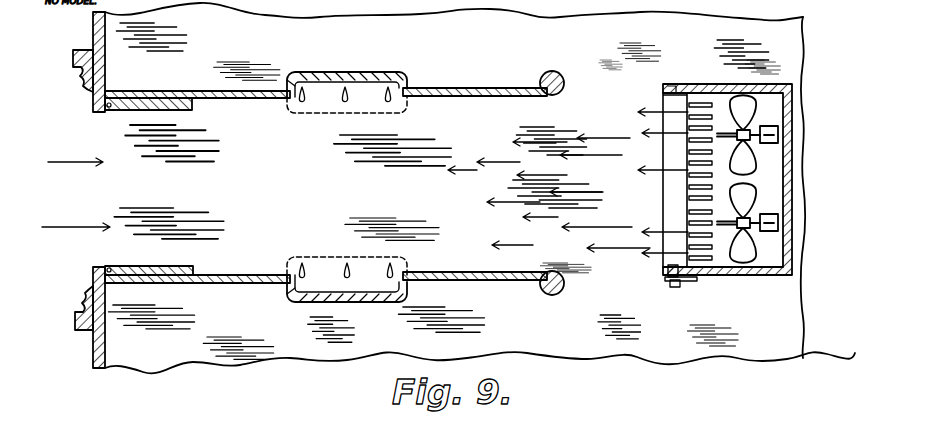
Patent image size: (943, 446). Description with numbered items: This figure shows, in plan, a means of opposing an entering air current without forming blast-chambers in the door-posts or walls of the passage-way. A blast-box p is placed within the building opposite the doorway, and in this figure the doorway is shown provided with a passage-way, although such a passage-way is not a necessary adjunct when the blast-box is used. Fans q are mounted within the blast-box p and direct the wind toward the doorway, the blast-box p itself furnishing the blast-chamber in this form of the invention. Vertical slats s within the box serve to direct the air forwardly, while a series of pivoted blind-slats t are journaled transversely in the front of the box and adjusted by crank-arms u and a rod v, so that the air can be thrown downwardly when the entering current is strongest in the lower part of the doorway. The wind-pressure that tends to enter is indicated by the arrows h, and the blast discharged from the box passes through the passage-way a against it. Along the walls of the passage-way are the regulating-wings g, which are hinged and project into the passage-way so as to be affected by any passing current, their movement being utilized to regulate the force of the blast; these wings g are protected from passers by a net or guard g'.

The wind-pressure arrows h is at (55, 162).
The air passage chamber a is at (223, 178).
The net or guard g' is at (425, 113).
The regulating-wings g is at (425, 261).
The pivoted blind-slats t is at (672, 183).
The vertical slats s is at (690, 192).
The crank-arms u is at (679, 287).
The rod v is at (700, 282).
The fans q is at (743, 253).
The blast-box p is at (774, 275).